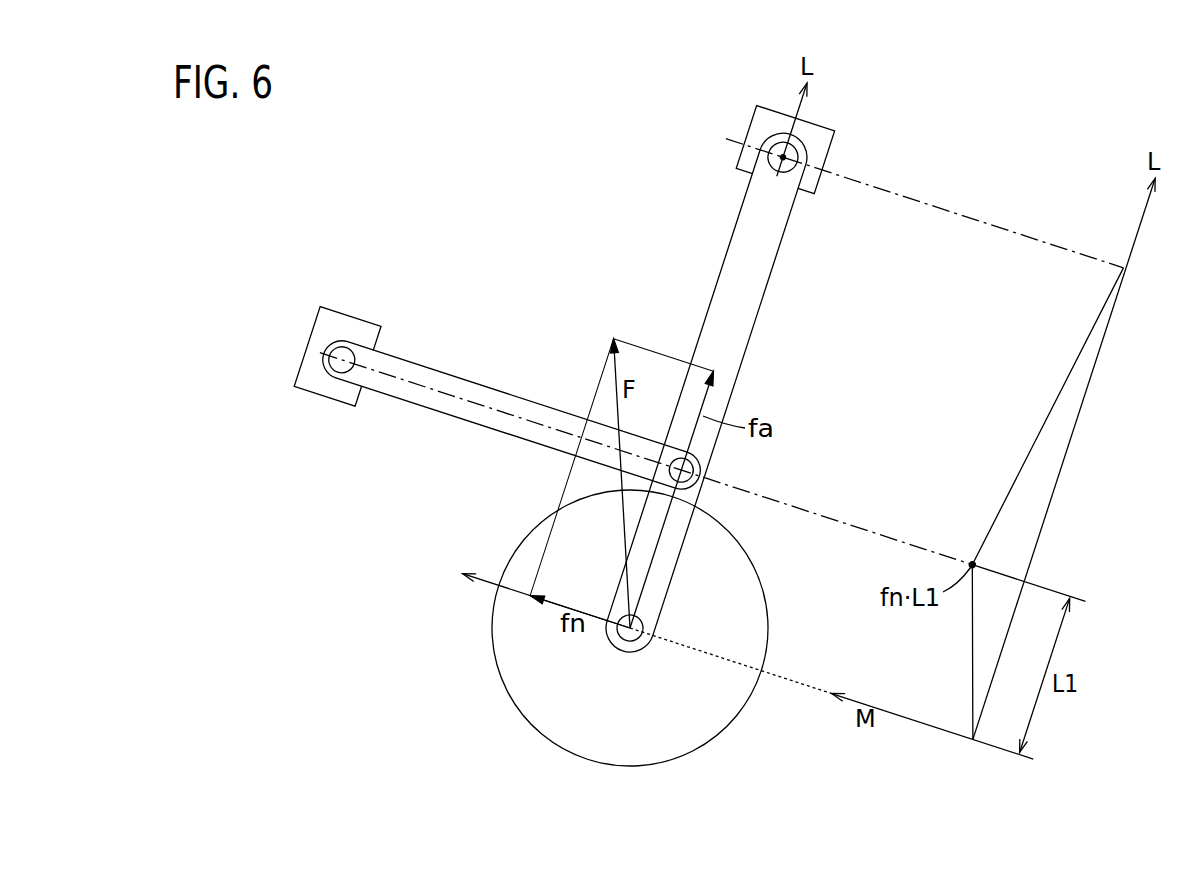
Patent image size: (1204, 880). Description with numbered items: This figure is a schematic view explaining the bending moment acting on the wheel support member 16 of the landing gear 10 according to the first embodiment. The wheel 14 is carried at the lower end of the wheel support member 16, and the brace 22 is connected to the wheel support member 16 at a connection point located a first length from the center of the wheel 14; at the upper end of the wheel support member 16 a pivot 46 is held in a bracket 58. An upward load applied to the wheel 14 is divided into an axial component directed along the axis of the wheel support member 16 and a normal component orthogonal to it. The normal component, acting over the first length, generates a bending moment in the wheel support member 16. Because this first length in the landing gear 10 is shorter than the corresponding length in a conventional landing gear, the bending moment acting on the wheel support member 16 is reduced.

The landing gear 10 is at (408, 155).
The wheel 14 is at (516, 714).
The wheel support member 16 is at (728, 247).
The brace 22 is at (414, 358).
The pivot shaft 46 is at (768, 140).
The bracket 58 is at (812, 138).